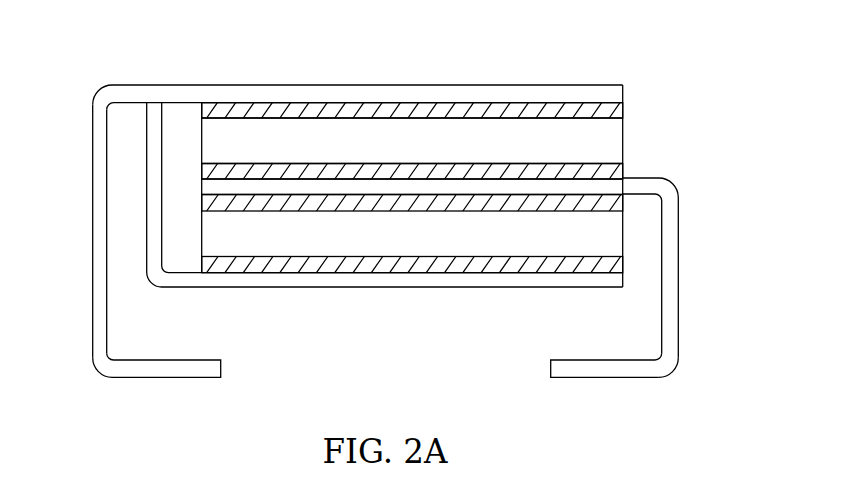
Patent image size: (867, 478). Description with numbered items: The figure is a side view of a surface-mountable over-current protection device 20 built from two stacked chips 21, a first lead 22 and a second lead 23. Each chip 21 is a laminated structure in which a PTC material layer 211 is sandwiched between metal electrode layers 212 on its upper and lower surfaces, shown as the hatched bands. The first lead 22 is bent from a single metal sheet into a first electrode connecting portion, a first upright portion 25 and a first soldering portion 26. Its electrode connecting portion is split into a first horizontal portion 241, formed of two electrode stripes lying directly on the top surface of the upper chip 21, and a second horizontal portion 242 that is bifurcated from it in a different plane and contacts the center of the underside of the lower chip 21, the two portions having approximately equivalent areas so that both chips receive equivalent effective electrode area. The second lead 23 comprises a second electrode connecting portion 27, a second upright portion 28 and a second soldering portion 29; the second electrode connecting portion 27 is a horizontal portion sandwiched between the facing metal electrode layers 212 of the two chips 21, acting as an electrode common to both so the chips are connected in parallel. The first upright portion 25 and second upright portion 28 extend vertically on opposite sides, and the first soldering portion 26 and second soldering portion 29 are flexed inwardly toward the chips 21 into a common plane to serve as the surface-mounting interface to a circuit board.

The surface-mountable over-current protection device 20 is at (675, 43).
The chip 21 is at (615, 232).
The PTC material layer 211 is at (615, 138).
The metal electrode layer 212 is at (310, 112).
The first lead 22 is at (98, 90).
The second lead 23 is at (668, 367).
The first horizontal portion 241 is at (385, 93).
The second horizontal portion 242 is at (397, 282).
The first upright portion 25 is at (92, 230).
The first soldering portion 26 is at (166, 377).
The second electrode connecting portion 27 is at (472, 185).
The second upright portion 28 is at (680, 277).
The second soldering portion 29 is at (598, 377).